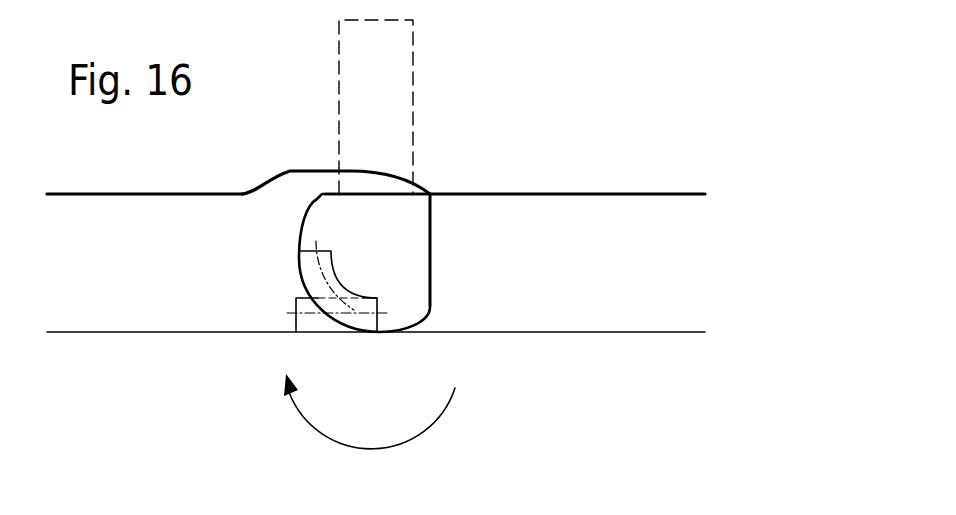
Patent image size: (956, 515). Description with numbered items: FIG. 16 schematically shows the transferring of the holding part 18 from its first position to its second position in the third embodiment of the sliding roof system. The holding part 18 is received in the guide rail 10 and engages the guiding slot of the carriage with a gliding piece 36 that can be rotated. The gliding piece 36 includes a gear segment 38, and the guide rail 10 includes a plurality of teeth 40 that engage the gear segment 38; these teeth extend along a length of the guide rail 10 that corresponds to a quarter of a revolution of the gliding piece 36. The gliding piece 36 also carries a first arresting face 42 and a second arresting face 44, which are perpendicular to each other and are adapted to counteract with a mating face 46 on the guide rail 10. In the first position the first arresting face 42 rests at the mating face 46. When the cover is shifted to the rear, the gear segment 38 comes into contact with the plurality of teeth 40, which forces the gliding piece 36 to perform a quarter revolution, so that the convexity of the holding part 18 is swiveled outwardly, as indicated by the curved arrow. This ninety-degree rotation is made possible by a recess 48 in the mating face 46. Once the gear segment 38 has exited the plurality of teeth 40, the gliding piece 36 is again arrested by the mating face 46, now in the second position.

The guide rail 10 is at (157, 334).
The holding part 18 is at (410, 82).
The gliding piece 36 is at (412, 279).
The gear segment 38 is at (308, 261).
The plurality of teeth 40 is at (330, 334).
The first arresting face 42 is at (432, 220).
The second arresting face 44 is at (401, 190).
The mating face 46 is at (106, 190).
The recess 48 is at (312, 182).